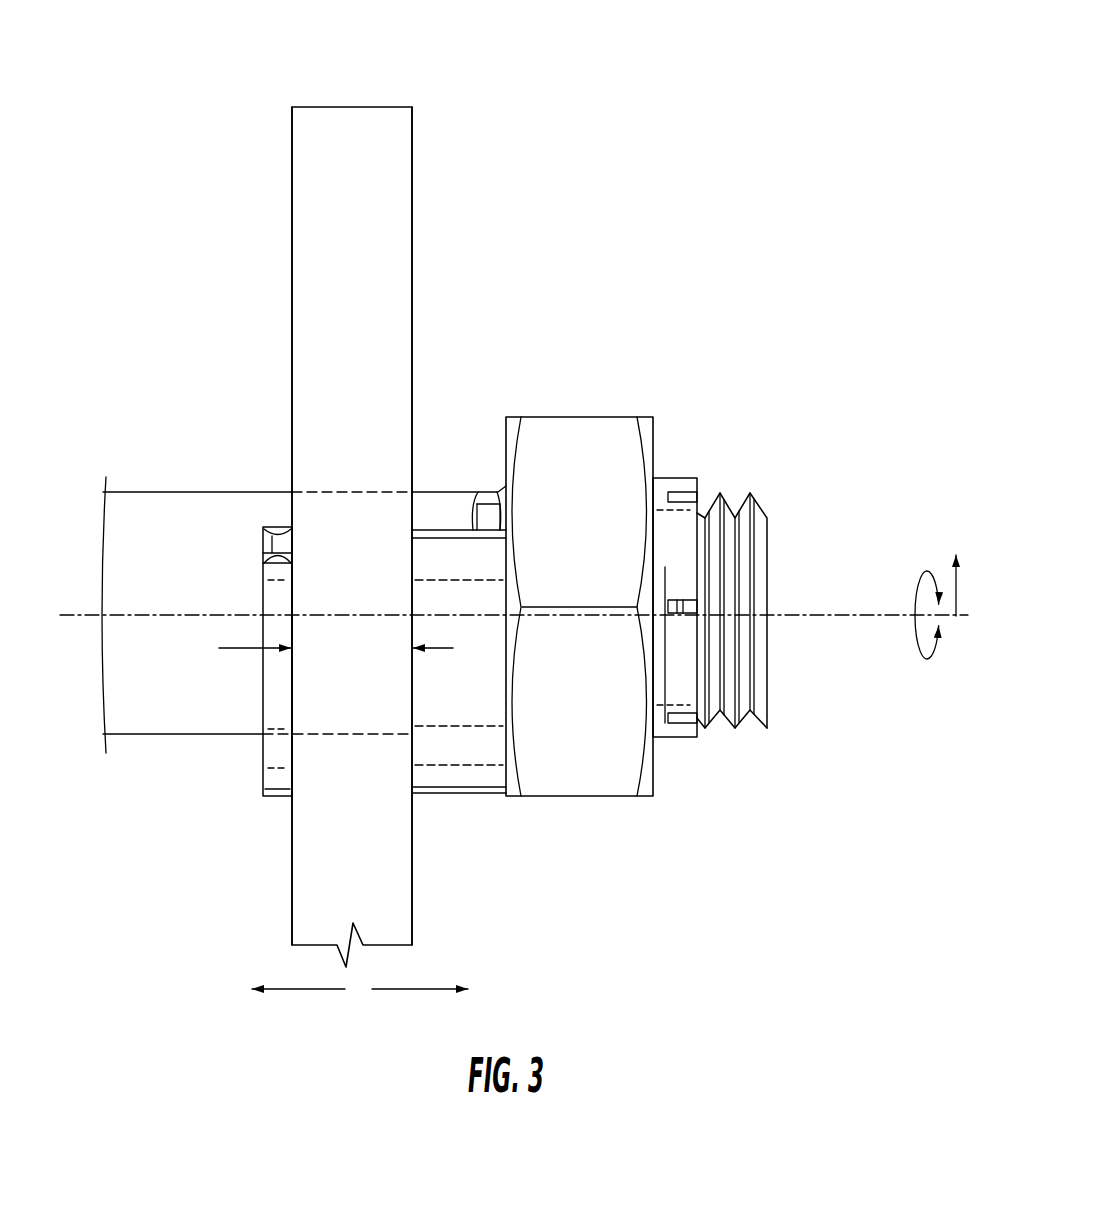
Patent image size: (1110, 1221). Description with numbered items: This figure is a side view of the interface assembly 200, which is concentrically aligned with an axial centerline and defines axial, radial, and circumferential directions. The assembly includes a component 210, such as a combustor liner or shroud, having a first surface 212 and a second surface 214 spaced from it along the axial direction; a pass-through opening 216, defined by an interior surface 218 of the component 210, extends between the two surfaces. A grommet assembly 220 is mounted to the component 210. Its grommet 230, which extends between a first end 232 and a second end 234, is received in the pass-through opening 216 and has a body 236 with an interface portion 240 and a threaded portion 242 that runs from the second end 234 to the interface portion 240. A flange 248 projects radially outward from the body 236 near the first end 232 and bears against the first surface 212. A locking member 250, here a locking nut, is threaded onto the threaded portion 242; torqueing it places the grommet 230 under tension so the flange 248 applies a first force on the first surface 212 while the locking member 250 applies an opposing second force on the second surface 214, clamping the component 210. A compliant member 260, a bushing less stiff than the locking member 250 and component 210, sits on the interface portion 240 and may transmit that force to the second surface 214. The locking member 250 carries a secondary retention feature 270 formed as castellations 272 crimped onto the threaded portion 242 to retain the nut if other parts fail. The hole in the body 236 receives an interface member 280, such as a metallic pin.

The interface assembly 200 is at (648, 112).
The component 210 is at (348, 499).
The first surface 212 is at (291, 173).
The second surface 214 is at (413, 184).
The pass-through opening 216 is at (365, 580).
The interior surface 218 is at (333, 490).
The grommet assembly 220 is at (585, 357).
The grommet 230 is at (747, 622).
The first end 232 is at (208, 690).
The second end 234 is at (751, 752).
The body 236 is at (466, 505).
The interface portion 240 is at (440, 515).
The threaded portion 242 is at (730, 737).
The flange 248 is at (263, 708).
The locking member 250 is at (585, 783).
The compliant member 260 is at (493, 590).
The secondary retention feature 270 is at (743, 539).
The castellations 272 is at (685, 557).
The interface member 280 is at (211, 586).